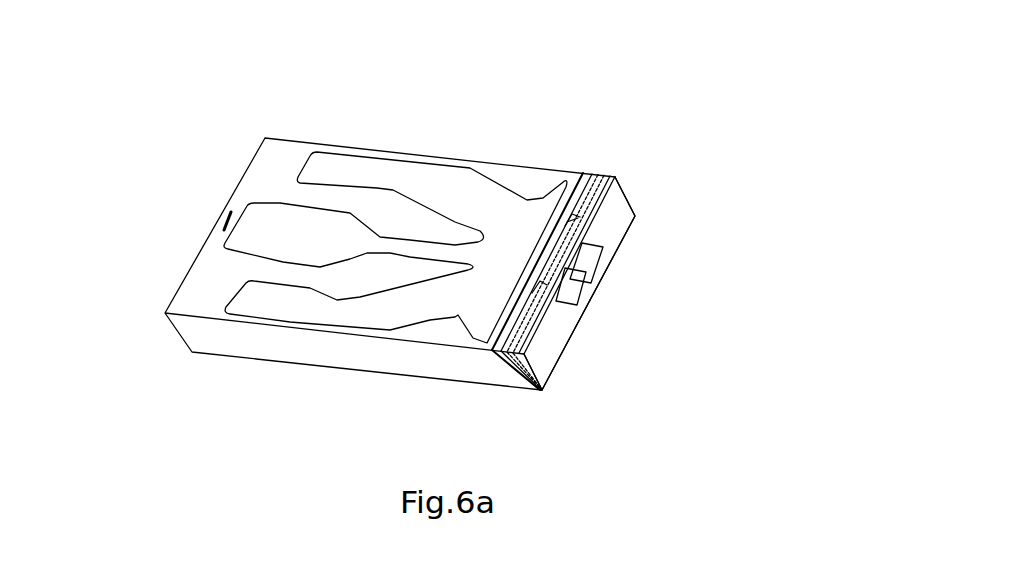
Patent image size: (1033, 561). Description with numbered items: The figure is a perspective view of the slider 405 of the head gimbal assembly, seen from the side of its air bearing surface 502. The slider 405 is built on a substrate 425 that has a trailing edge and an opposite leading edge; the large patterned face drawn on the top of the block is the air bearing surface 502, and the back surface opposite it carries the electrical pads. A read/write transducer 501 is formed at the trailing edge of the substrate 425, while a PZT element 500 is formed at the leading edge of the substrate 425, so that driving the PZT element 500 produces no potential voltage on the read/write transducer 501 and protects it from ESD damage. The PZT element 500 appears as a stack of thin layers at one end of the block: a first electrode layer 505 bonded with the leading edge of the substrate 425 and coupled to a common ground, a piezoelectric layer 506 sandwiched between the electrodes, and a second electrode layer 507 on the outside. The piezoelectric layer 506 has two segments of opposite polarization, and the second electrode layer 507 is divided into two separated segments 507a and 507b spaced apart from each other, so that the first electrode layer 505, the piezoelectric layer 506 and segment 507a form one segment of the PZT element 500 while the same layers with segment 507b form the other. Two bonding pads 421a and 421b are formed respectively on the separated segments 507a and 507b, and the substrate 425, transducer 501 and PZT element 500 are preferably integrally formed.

The slider 405 is at (116, 47).
The substrate 425 is at (394, 355).
The read/write transducer 501 is at (222, 222).
The air bearing surface 502 is at (350, 175).
The PZT element 500 is at (728, 69).
The first electrode layer 505 is at (587, 175).
The piezoelectric layer 506 is at (602, 177).
The second electrode layer 507 is at (615, 183).
The segment of second electrode layer 507a is at (617, 222).
The segment of second electrode layer 507b is at (540, 334).
The bonding pad 421a is at (600, 259).
The bonding pad 421b is at (585, 286).